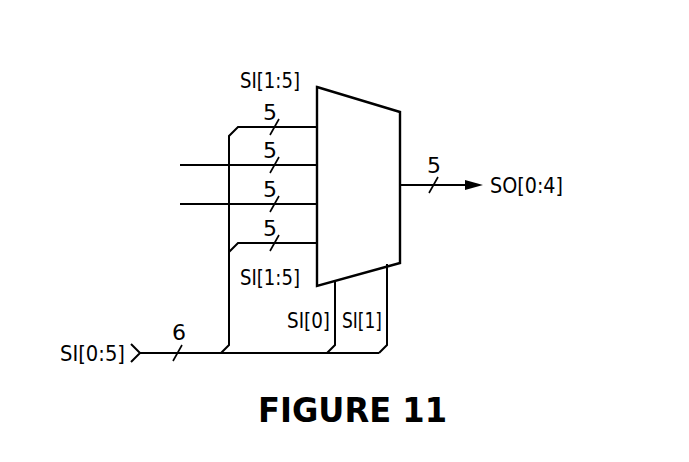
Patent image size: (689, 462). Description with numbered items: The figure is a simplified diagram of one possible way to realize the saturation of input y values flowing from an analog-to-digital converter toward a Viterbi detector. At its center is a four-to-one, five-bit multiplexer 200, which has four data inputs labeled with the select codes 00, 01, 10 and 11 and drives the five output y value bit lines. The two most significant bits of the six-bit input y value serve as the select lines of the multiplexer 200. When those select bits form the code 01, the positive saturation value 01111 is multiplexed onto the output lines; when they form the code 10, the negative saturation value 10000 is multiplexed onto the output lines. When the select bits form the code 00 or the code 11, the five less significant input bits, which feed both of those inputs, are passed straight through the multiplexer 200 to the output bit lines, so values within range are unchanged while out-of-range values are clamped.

The multiplexer 200 is at (362, 99).
The multiplexer input port 00 is at (287, 234).
The multiplexer input port 01 is at (311, 165).
The multiplexer input port 10 is at (311, 204).
The multiplexer input port 11 is at (291, 243).
The constant input 01111 is at (217, 163).
The constant input 10000 is at (217, 204).